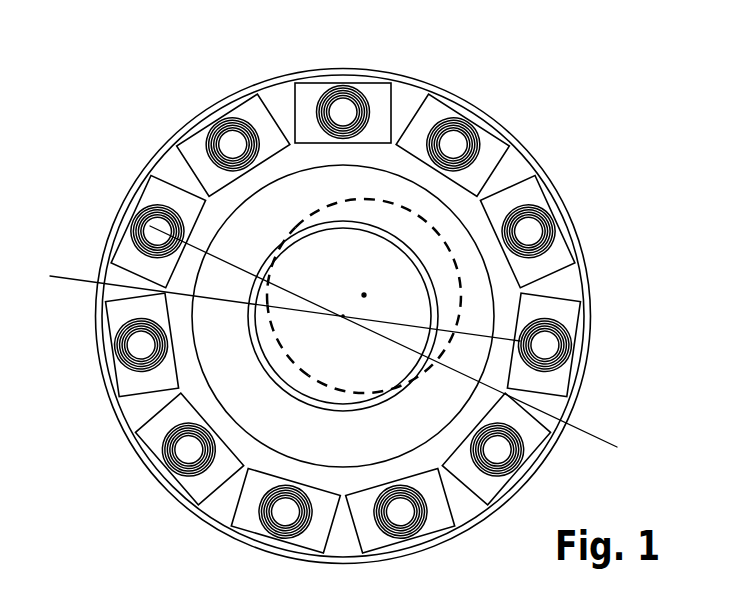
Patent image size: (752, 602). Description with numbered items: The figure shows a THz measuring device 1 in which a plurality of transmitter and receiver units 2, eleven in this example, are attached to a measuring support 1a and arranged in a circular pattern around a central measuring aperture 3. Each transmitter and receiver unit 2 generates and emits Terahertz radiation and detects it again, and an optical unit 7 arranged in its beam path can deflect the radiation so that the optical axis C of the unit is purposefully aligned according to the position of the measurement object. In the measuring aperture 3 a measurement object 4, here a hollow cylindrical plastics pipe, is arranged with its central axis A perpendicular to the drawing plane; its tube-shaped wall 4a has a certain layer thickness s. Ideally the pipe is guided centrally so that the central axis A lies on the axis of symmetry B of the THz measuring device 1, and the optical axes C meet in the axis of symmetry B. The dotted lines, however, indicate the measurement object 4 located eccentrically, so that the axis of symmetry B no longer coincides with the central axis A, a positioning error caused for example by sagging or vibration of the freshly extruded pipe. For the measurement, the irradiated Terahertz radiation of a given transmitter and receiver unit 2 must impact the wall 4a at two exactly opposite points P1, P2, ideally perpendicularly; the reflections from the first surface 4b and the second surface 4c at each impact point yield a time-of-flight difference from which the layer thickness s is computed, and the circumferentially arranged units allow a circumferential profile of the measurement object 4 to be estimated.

The THz measuring device 1 is at (537, 83).
The measuring support 1a is at (410, 97).
The transmitter and receiver unit 2 is at (187, 148).
The measuring aperture 3 is at (420, 437).
The measurement object 4 is at (333, 196).
The wall 4a is at (338, 408).
The first surface 4b is at (264, 262).
The second surface 4c is at (271, 353).
The optical unit 7 is at (224, 138).
The layer thickness s is at (293, 400).
The central axis A is at (363, 292).
The axis of symmetry B is at (343, 317).
The first impact point P1 is at (252, 281).
The second impact point P2 is at (413, 343).
The optical axis C is at (85, 283).